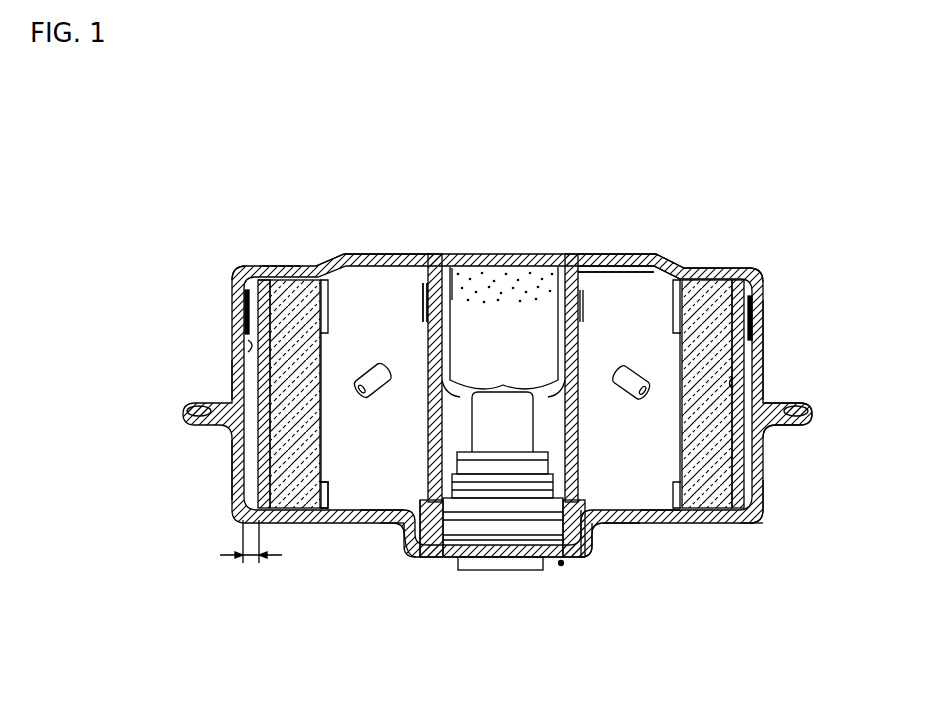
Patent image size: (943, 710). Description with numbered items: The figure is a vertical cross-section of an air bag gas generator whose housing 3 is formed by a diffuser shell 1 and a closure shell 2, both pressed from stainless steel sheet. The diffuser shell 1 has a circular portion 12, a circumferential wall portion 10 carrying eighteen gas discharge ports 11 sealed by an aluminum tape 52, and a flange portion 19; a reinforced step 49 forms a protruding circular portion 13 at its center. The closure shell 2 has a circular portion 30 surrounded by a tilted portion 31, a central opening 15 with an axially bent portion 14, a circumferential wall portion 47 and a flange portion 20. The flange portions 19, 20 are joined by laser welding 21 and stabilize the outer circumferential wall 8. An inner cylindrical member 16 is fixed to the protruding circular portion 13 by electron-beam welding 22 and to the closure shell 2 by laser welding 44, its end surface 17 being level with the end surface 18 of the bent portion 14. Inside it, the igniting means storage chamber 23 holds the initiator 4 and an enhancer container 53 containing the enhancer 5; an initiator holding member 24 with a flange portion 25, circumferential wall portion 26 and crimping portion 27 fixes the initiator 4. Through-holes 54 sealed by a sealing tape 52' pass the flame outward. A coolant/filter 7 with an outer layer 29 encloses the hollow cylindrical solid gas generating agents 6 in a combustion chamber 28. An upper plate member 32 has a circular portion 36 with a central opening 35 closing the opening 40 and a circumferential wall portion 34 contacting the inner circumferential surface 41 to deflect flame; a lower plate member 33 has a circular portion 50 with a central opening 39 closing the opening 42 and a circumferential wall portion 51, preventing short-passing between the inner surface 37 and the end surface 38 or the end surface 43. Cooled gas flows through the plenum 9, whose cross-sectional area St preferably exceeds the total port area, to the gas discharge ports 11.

The diffuser shell 1 is at (647, 252).
The closure shell 2 is at (302, 532).
The housing 3 is at (595, 243).
The initiator 4 is at (380, 522).
The enhancer 5 is at (513, 275).
The solid gas generating agents 6 is at (364, 372).
The coolant/filter 7 is at (660, 525).
The outer circumferential wall 8 is at (772, 352).
The plenum 9 is at (766, 270).
The circumferential wall portion 10 is at (232, 380).
The gas discharge ports 11 is at (243, 305).
The circular portion 12 is at (758, 272).
The protruding circular portion 13 is at (396, 246).
The bent portion 14 is at (580, 545).
The central opening 15 is at (452, 562).
The inner cylindrical member 16 is at (632, 277).
The end surface 17 is at (434, 552).
The end surface 18 is at (426, 538).
The flange portion 19 is at (798, 407).
The flange portion 20 is at (773, 426).
The laser welding 21 is at (806, 413).
The electron-beam welding 22 is at (571, 262).
The igniting means storage chamber 23 is at (493, 300).
The initiator holding member 24 is at (591, 496).
The flange portion 25 is at (582, 492).
The circumferential wall portion 26 is at (526, 567).
The crimping portion 27 is at (561, 566).
The combustion chamber 28 is at (669, 270).
The outer layer 29 is at (757, 505).
The circular portion 30 is at (694, 525).
The tilted portion 31 is at (772, 525).
The plate member 32 is at (413, 268).
The plate member 33 is at (620, 533).
The circumferential wall portion 34 is at (336, 262).
The central opening 35 is at (582, 360).
The circular portion 36 is at (348, 268).
The inner surface 37 is at (248, 270).
The end surface 38 is at (290, 266).
The central opening 39 is at (396, 522).
The opening 40 is at (694, 262).
The inner circumferential surface 41 is at (733, 383).
The opening 42 is at (667, 525).
The end surface 43 is at (713, 525).
The laser welding 44 is at (582, 562).
The circumferential wall portion 47 is at (232, 472).
The reinforced step 49 is at (330, 276).
The circular portion 50 is at (327, 522).
The circumferential wall portion 51 is at (328, 493).
The aluminum tape 52 is at (189, 343).
The sealing tape 52' is at (474, 376).
The enhancer container 53 is at (357, 522).
The through-holes 54 is at (426, 283).
The area of the radial cross-section of the gas channel St is at (250, 563).